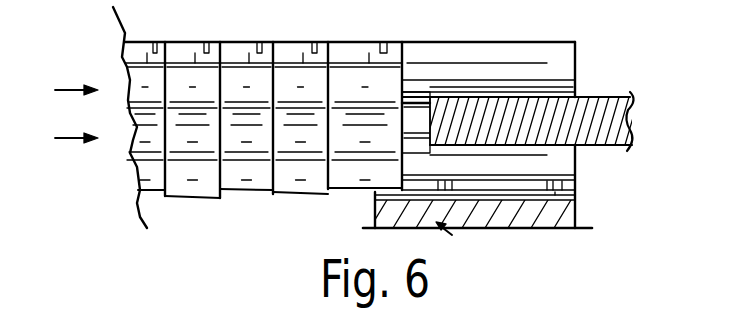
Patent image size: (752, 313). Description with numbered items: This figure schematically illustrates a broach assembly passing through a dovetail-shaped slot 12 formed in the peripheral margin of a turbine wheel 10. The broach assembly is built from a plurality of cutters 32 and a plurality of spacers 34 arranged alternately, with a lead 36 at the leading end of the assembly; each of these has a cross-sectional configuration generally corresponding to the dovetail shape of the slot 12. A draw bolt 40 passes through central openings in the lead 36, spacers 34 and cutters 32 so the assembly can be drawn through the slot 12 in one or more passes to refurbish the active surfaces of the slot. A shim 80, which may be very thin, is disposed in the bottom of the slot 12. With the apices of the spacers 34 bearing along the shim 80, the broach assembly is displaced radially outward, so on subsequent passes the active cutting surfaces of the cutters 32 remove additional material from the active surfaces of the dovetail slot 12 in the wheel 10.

The wheel 10 is at (500, 228).
The slot 12 is at (492, 72).
The cutter 32 is at (243, 191).
The spacer 34 is at (297, 191).
The lead 36 is at (349, 190).
The draw bolt 40 is at (600, 98).
The shim 80 is at (576, 197).